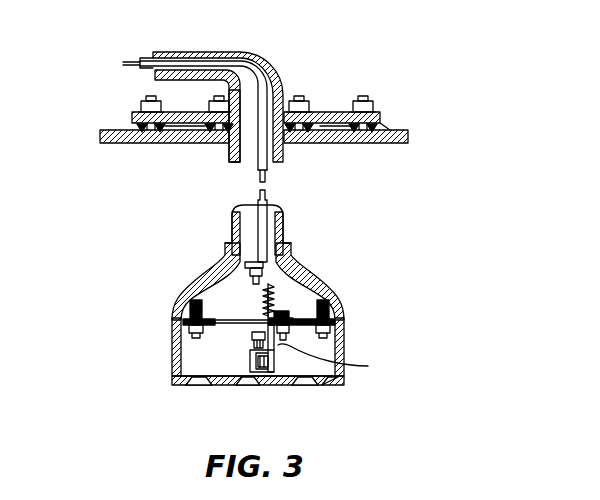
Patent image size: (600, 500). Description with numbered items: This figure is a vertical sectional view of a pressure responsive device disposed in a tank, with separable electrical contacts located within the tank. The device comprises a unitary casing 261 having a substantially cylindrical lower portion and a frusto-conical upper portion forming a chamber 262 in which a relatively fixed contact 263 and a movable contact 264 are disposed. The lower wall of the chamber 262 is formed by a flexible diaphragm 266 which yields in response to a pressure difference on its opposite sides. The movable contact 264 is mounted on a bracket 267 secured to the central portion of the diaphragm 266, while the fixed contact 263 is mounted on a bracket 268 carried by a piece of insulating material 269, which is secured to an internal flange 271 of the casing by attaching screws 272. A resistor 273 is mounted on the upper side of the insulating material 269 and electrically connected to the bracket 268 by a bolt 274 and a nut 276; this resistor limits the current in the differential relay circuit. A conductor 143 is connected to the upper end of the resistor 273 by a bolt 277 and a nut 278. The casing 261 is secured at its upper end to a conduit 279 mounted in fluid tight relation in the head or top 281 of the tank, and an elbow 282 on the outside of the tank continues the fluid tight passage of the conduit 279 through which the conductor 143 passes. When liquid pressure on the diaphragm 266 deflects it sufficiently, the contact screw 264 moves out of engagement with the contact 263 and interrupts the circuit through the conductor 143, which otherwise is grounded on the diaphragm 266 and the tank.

The conductor 143 is at (267, 186).
The unitary casing 261 is at (229, 329).
The chamber 262 is at (193, 337).
The fixed contact 263 is at (276, 352).
The movable contact 264 is at (254, 336).
The flexible diaphragm 266 is at (209, 384).
The bracket 267 is at (249, 358).
The bracket 268 is at (274, 370).
The piece of insulating material 269 is at (290, 332).
The internal flange 271 is at (337, 318).
The attaching screws 272 is at (344, 333).
The resistor 273 is at (272, 292).
The bolt 274 is at (285, 312).
The nut 276 is at (342, 360).
The bolt 277 is at (233, 257).
The nut 278 is at (243, 274).
The conduit 279 is at (233, 162).
The head or top of tank 281 is at (396, 132).
The elbow 282 is at (265, 52).